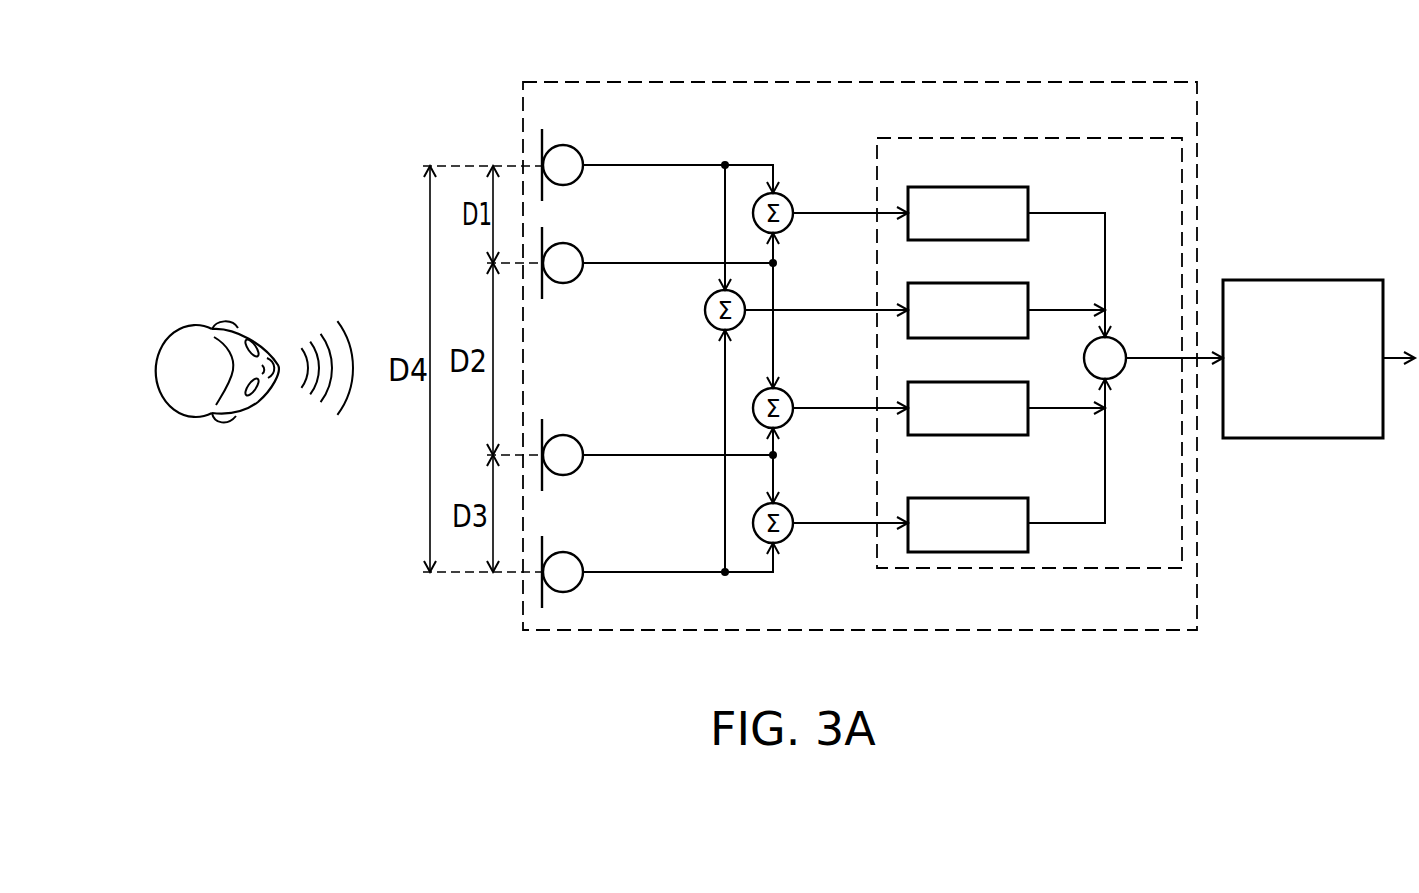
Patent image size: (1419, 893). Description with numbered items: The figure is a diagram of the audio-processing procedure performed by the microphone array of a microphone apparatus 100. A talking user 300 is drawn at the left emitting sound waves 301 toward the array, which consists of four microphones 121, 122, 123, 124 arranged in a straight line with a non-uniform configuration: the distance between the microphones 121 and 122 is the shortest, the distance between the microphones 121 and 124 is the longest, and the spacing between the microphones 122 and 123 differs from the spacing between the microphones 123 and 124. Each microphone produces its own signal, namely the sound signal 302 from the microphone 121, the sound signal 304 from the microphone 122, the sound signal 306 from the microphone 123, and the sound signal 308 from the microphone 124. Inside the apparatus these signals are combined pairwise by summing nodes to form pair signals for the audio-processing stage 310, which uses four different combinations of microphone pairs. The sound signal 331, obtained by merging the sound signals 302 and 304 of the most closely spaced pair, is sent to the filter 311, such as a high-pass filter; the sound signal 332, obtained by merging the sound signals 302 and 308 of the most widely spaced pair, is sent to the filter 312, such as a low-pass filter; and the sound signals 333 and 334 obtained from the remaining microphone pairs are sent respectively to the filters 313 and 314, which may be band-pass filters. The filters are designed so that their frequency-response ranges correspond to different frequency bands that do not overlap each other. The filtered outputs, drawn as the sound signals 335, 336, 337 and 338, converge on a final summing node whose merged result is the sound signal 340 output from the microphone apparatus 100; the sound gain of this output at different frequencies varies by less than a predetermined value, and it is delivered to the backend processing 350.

The microphone apparatus 100 is at (523, 82).
The microphone 121 is at (564, 146).
The microphone 122 is at (564, 244).
The microphone 123 is at (564, 436).
The microphone 124 is at (564, 553).
The user / speaker 300 is at (193, 325).
The sound waves 301 is at (316, 340).
The sound signal 302 is at (679, 164).
The sound signal 304 is at (679, 262).
The third audio signal 306 is at (679, 454).
The sound signal 308 is at (679, 571).
The audio-processing stage 310 is at (877, 137).
The filter 311 is at (908, 186).
The filter 312 is at (908, 282).
The filter 313 is at (908, 381).
The filter 314 is at (908, 497).
The sound signal 331 is at (835, 212).
The sound signal 332 is at (835, 309).
The sound signal 333 is at (835, 407).
The sound signal 334 is at (835, 522).
The sound signal 335 is at (1053, 212).
The sound signal 336 is at (1053, 309).
The third filtered signal 337 is at (1053, 407).
The fourth filtered signal 338 is at (1053, 522).
The sound signal 340 is at (1149, 357).
The backend processing 350 is at (1223, 280).